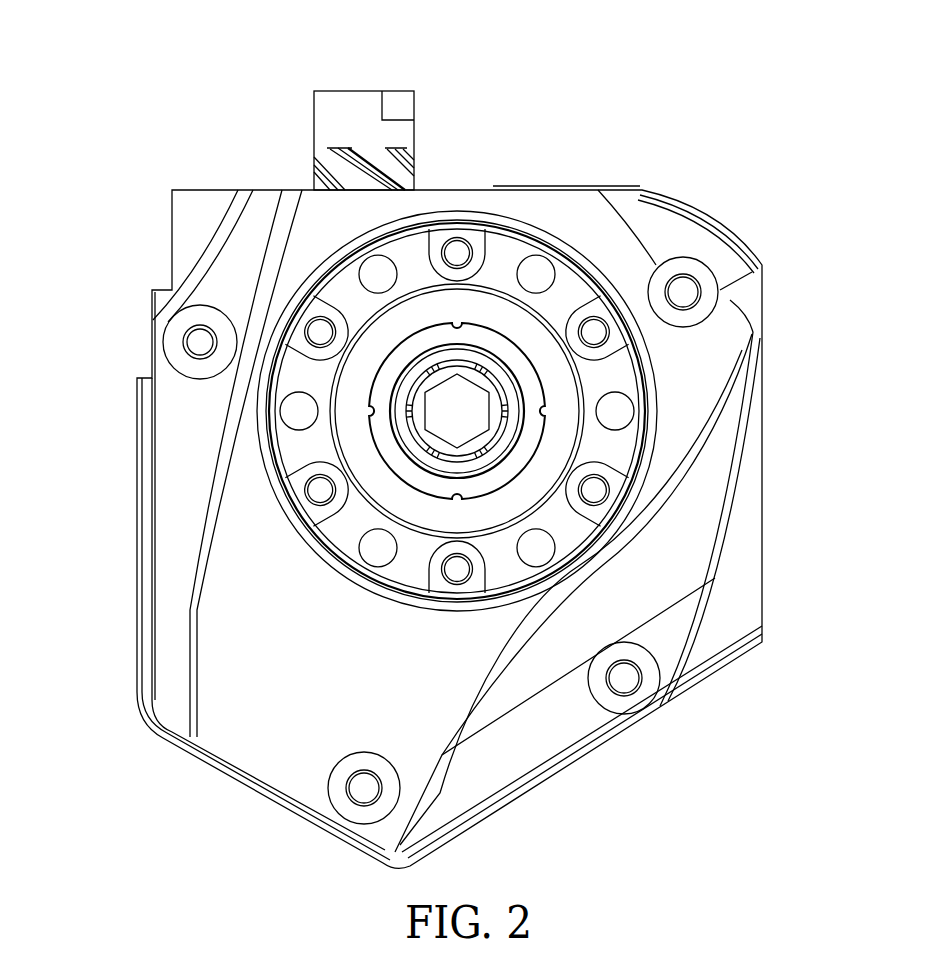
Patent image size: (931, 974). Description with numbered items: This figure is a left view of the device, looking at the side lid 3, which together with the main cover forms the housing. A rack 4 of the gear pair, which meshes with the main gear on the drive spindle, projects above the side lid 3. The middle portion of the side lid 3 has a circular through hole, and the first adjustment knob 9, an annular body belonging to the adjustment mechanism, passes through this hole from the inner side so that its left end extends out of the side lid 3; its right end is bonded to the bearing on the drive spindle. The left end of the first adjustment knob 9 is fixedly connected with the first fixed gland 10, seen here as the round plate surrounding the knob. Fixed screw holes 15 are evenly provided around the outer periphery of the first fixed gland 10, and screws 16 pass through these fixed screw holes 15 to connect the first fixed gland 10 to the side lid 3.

The side lid 3 is at (200, 218).
The rack 4 is at (352, 127).
The first adjustment knob 9 is at (515, 450).
The first fixed gland 10 is at (421, 313).
The fixed screw holes 15 is at (378, 276).
The screws 16 is at (458, 254).